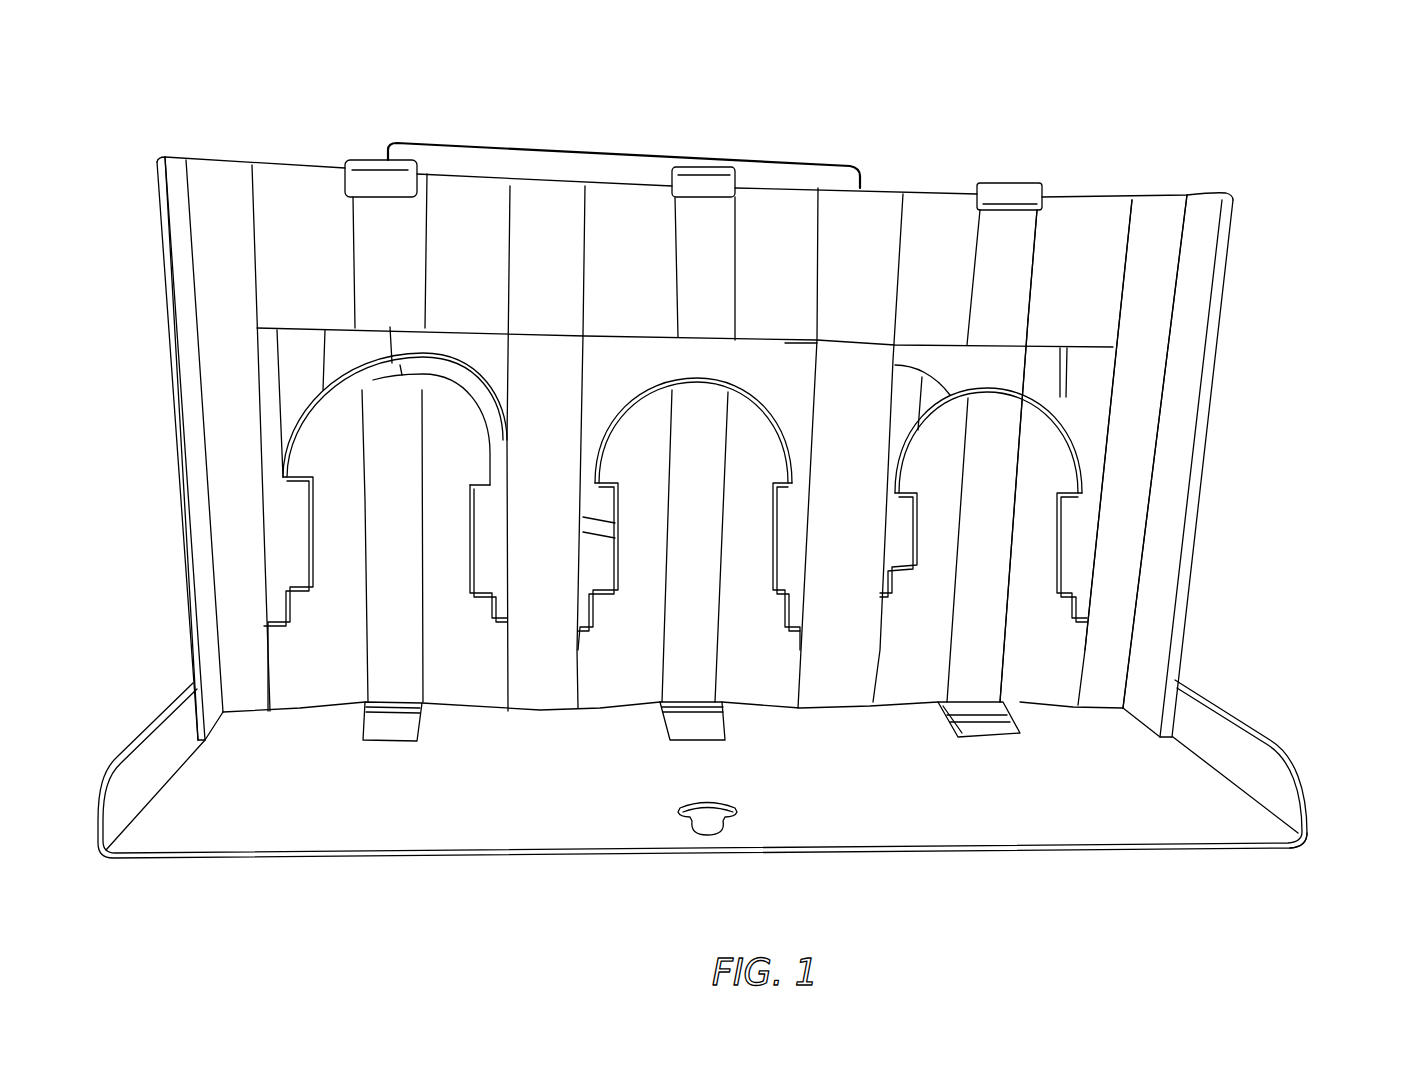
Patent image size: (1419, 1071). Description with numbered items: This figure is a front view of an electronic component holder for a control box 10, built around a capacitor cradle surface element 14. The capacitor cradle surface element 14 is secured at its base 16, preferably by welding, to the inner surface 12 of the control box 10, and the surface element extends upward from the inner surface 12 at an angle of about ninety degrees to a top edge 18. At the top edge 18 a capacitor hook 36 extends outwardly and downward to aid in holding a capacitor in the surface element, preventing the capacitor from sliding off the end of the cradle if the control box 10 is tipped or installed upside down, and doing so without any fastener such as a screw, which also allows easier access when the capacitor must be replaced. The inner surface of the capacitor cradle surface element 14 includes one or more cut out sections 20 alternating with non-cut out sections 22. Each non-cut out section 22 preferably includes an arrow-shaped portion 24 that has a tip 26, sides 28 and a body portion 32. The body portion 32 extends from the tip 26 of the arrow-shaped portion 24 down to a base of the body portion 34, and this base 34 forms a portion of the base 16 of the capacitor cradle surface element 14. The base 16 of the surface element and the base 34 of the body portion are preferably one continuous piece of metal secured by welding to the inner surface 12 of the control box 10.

The control box 10 is at (1310, 803).
The inner surface of the control box 12 is at (616, 778).
The capacitor cradle surface element 14 is at (1320, 203).
The base of the capacitor cradle surface element 16 is at (387, 742).
The top edge of the cradle surface element 18 is at (303, 160).
The cut out sections 20 is at (1090, 362).
The non-cut out sections 22 is at (688, 618).
The arrow-shaped portion 24 is at (1033, 538).
The tip 26 is at (692, 370).
The sides 28 is at (335, 500).
The body portion 32 is at (710, 531).
The base of the body portion 34 is at (1023, 705).
The capacitor hook 36 is at (1008, 182).